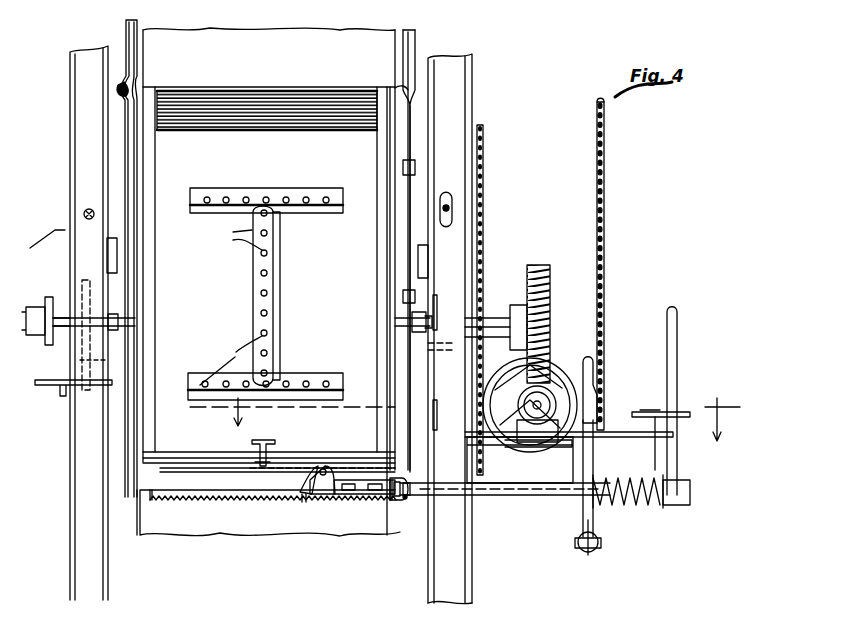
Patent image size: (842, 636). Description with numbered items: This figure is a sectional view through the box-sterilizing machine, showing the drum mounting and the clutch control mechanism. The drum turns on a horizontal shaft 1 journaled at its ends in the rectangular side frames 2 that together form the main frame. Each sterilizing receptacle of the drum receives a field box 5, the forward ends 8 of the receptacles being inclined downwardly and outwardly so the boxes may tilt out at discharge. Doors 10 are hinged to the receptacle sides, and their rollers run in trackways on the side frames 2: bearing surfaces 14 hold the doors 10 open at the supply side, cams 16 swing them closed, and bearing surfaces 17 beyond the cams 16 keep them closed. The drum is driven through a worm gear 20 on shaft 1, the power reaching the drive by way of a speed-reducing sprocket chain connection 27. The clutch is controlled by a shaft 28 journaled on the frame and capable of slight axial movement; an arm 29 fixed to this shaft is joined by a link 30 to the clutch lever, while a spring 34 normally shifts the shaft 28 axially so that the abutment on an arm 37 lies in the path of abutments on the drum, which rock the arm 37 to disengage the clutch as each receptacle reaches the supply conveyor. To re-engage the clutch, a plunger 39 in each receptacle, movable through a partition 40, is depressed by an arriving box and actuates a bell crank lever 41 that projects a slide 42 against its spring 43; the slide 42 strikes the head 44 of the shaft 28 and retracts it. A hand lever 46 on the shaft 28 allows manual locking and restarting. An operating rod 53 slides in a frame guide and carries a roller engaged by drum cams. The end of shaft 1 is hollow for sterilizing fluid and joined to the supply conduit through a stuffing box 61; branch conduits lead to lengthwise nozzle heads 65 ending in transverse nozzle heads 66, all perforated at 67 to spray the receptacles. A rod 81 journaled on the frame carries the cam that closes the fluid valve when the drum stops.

The shaft 1 is at (492, 312).
The side frames 2 is at (253, 325).
The field box 5 is at (465, 419).
The forward ends of the receptacles 8 is at (296, 118).
The doors 10 is at (135, 345).
The bearing surfaces 14 is at (137, 490).
The cams 16 is at (130, 86).
The bearing surfaces 17 is at (414, 38).
The worm gear 20 is at (548, 290).
The sprocket chain connection 27 is at (604, 318).
The shaft 28 is at (515, 497).
The arm 29 is at (590, 532).
The link 30 is at (598, 397).
The spring 34 is at (635, 455).
The arm 37 is at (406, 500).
The plunger 39 is at (253, 440).
The partition 40 is at (350, 440).
The bell crank lever 41 is at (318, 496).
The slide 42 is at (385, 500).
The spring 43 is at (196, 500).
The head of shaft 44 is at (394, 500).
The hand lever 46 is at (677, 355).
The operating rod 53 is at (450, 208).
The stuffing box 61 is at (55, 282).
The nozzle heads 65 is at (256, 283).
The transverse nozzle heads 66 is at (322, 215).
The perforations 67 is at (206, 212).
The rod 81 is at (89, 209).